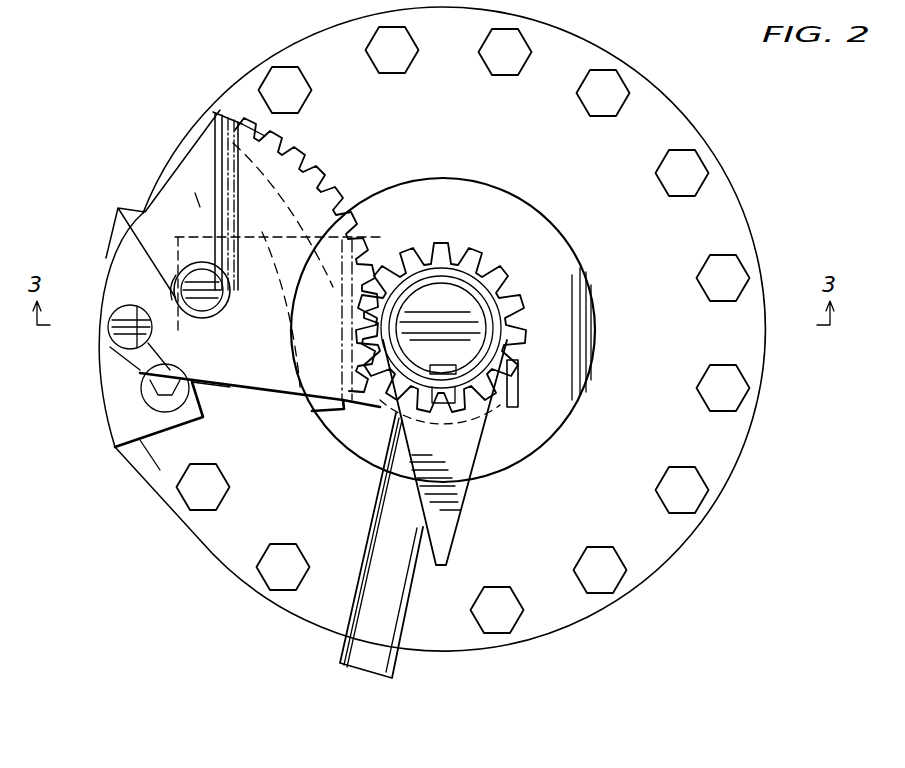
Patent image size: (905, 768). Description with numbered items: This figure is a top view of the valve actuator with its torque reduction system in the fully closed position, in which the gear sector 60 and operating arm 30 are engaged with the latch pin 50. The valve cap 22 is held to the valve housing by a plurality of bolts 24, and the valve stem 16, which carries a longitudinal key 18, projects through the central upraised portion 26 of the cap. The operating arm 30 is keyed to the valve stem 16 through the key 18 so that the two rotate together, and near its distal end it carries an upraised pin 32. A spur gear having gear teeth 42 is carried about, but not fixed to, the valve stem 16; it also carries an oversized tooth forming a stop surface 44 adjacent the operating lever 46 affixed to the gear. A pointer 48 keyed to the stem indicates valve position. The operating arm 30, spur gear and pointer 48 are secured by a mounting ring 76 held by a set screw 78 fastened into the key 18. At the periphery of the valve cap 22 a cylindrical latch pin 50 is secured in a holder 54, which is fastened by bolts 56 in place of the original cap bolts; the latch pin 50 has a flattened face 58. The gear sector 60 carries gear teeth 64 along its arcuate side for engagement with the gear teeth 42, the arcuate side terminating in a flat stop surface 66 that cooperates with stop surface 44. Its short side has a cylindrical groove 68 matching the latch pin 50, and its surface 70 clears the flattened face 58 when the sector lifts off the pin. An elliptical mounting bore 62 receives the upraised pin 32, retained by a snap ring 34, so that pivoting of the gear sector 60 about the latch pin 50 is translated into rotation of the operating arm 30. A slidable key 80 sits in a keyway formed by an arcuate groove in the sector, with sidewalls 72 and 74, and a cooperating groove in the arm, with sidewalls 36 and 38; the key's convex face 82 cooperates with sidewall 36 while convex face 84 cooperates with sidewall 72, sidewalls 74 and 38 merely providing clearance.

The valve stem 16 is at (470, 307).
The key 18 is at (443, 366).
The valve cap 22 is at (660, 548).
The bolts 24 is at (700, 488).
The central upraised portion 26 is at (582, 313).
The operating arm 30 is at (395, 248).
The upraised pin 32 is at (193, 270).
The snap ring 34 is at (225, 297).
The sidewall 36 is at (310, 285).
The sidewall 38 is at (352, 400).
The gear teeth 42 is at (453, 245).
The stop surface 44 is at (520, 387).
The operating lever 46 is at (392, 662).
The pointer 48 is at (450, 512).
The latch pin 50 is at (117, 340).
The holder 54 is at (130, 428).
The bolts 56 is at (168, 400).
The flattened face 58 is at (167, 390).
The gear sector 60 is at (206, 365).
The elliptical mounting bore 62 is at (118, 207).
The gear teeth 64 is at (300, 165).
The flat stop surface 66 is at (228, 112).
The cylindrical groove 68 is at (130, 322).
The surface 70 is at (100, 283).
The sidewall 72 is at (228, 140).
The sidewall 74 is at (195, 193).
The mounting ring 76 is at (467, 277).
The set screw 78 is at (448, 405).
The slidable key 80 is at (313, 393).
The convex face 82 is at (293, 390).
The convex face 84 is at (310, 407).